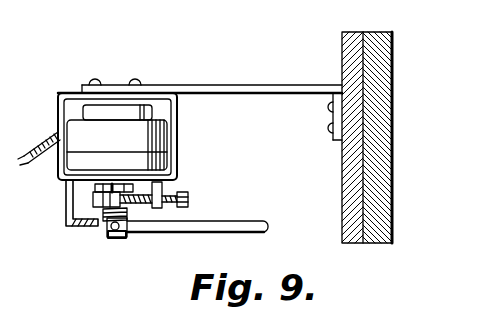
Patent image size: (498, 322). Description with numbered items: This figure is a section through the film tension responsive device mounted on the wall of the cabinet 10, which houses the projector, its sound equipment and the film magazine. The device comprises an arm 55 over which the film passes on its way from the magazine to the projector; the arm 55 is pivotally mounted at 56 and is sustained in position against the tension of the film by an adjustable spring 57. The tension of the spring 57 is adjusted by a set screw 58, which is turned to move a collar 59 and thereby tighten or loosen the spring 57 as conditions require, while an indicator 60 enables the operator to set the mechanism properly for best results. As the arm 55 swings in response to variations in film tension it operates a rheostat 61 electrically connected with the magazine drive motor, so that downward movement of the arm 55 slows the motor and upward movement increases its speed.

The cabinet 10 is at (338, 43).
The arm 55 is at (243, 229).
The pivot 56 is at (115, 239).
The adjustable spring 57 is at (112, 231).
The set screw 58 is at (190, 197).
The collar 59 is at (93, 199).
The indicator 60 is at (93, 227).
The rheostat 61 is at (117, 137).